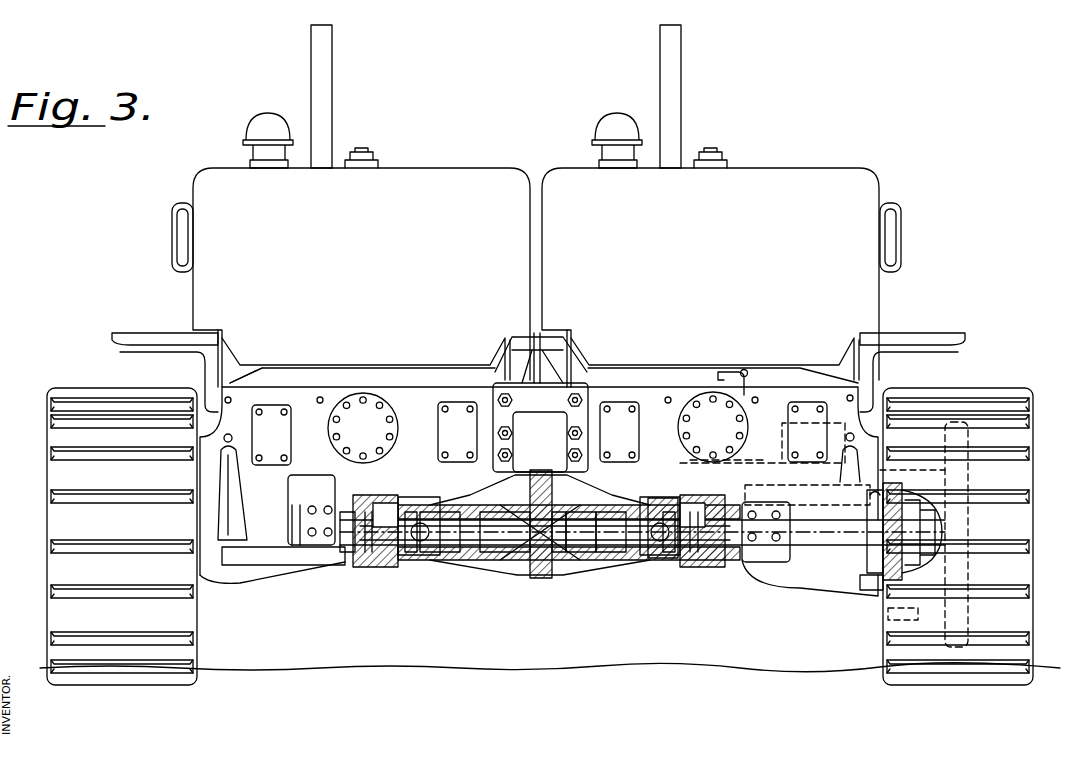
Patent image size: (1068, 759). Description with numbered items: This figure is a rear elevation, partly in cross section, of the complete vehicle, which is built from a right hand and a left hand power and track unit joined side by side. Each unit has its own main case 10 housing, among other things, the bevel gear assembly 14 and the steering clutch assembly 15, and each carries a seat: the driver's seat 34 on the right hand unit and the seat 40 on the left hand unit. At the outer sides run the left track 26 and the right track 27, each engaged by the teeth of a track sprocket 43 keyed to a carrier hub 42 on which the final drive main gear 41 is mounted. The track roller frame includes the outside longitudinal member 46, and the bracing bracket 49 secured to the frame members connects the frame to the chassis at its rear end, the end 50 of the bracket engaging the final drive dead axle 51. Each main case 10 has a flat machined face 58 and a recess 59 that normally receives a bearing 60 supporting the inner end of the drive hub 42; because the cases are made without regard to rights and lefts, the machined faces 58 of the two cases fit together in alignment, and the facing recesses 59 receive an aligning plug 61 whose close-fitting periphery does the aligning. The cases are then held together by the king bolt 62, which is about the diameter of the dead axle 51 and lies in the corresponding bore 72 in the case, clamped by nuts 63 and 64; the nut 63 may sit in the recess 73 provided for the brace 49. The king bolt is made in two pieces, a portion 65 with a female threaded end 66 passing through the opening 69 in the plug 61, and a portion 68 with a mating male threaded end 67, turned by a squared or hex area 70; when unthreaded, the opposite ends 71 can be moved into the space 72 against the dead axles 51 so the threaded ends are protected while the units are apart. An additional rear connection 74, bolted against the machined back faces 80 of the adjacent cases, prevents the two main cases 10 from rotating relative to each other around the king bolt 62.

The main case 10 is at (430, 440).
The bevel gear assembly 14 is at (690, 462).
The steering clutch assembly 15 is at (826, 502).
The track 26 is at (70, 388).
The track 27 is at (955, 390).
The driver's seat 34 is at (724, 264).
The seat 40 is at (376, 264).
The final drive main gear 41 is at (882, 625).
The carrier hub 42 is at (880, 582).
The track sprocket 43 is at (956, 648).
The longitudinal member 46 is at (893, 462).
The bracing bracket 49 is at (250, 585).
The end of the bracket 50 is at (300, 512).
The dead axle 51 is at (356, 553).
The machined face 58 is at (200, 478).
The recess 59 is at (515, 560).
The bearing 60 is at (932, 535).
The aligning plug 61 is at (535, 578).
The king bolt 62 is at (480, 560).
The clamping nut 63 is at (425, 565).
The clamping nut 64 is at (660, 560).
The portion 65 is at (500, 513).
The female threaded end 66 is at (530, 500).
The male threaded end 67 is at (572, 515).
The portion 68 is at (584, 520).
The opening 69 is at (559, 505).
The squared or hex area 70 is at (409, 555).
The end 71 is at (370, 555).
The bore 72 is at (382, 520).
The recess 73 is at (412, 500).
The rear connection 74 is at (552, 398).
The machined back face 80 is at (441, 383).